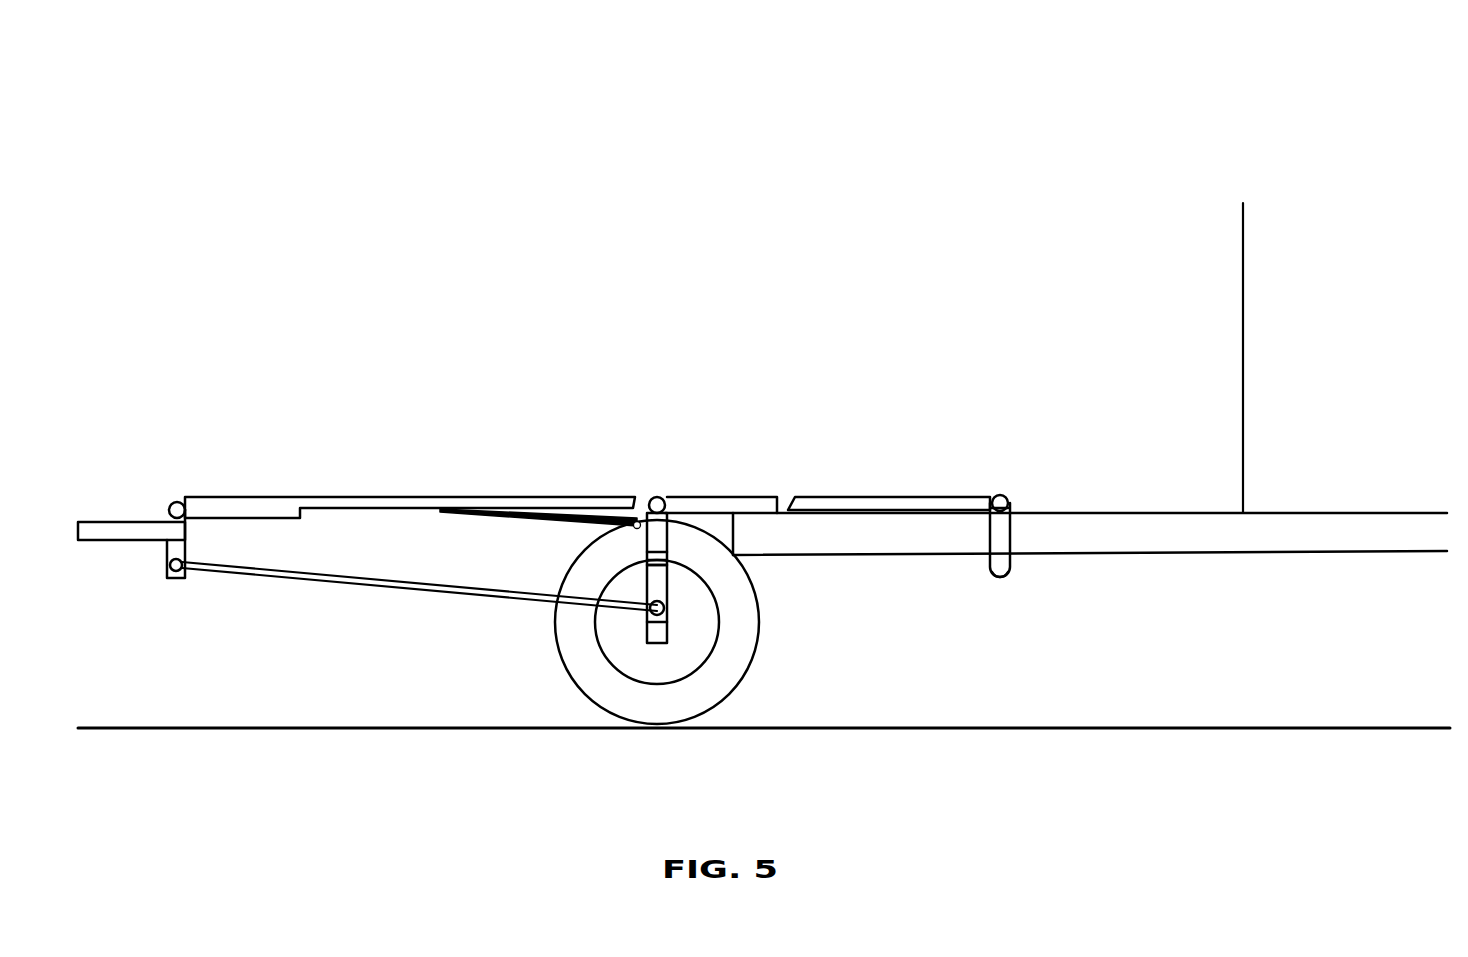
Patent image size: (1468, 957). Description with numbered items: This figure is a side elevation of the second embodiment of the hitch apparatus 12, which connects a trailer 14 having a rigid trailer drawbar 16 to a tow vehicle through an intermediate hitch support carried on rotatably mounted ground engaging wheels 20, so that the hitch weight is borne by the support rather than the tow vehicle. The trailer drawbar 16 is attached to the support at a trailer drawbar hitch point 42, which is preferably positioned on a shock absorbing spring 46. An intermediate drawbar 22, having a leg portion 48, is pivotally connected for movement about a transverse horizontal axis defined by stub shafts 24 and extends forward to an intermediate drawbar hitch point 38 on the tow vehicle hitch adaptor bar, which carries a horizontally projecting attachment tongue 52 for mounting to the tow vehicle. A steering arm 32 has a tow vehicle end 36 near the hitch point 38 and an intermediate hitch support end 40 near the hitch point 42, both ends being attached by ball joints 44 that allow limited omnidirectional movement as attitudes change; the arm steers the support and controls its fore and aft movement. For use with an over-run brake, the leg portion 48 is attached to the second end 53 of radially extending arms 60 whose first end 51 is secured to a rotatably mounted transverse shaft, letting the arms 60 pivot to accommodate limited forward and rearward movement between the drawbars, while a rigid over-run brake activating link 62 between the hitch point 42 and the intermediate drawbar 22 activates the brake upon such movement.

The apparatus 12 is at (385, 148).
The trailer 14 is at (1277, 333).
The trailer drawbar 16 is at (1132, 532).
The ground engaging wheels 20 is at (693, 692).
The intermediate drawbar 22 is at (497, 497).
The stub shafts 24 is at (998, 496).
The steering arm 32 is at (405, 587).
The tow vehicle end 36 is at (220, 570).
The intermediate drawbar hitch point 38 is at (183, 504).
The intermediate hitch support end 40 is at (590, 603).
The trailer drawbar hitch point 42 is at (661, 499).
The ball joints 44 is at (167, 577).
The spring 46 is at (665, 565).
The leg portion 48 is at (917, 505).
The first end 51 is at (1003, 567).
The attachment tongue 52 is at (95, 532).
The second end 53 is at (1007, 508).
The radially extending arms 60 is at (1003, 543).
The over-run brake activating link 62 is at (537, 518).